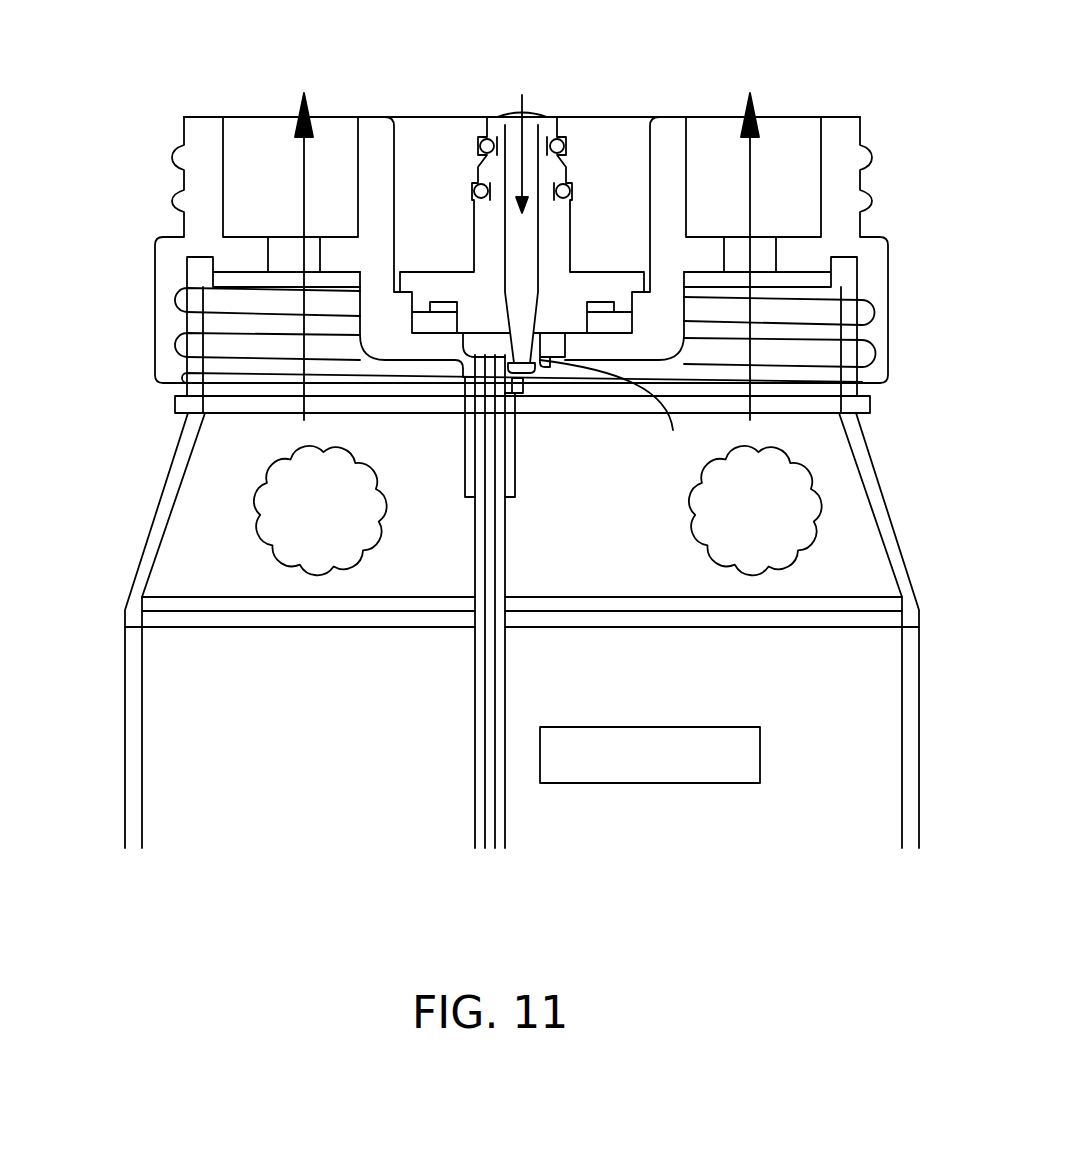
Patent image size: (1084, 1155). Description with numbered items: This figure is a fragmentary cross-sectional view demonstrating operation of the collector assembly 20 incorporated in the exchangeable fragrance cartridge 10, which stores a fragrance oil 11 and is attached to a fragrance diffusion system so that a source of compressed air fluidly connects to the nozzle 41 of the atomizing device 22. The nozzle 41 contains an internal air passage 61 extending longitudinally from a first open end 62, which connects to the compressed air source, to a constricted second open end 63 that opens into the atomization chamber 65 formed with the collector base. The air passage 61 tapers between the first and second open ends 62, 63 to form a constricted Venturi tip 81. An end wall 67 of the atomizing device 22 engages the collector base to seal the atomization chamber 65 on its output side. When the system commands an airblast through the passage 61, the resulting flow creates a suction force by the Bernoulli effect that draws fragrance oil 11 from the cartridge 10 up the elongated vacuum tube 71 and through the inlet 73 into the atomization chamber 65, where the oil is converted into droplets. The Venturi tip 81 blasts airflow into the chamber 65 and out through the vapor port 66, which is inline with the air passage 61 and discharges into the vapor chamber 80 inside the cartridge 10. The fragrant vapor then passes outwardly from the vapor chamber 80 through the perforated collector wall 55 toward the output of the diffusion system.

The exchangeable fragrance cartridge 10 is at (98, 157).
The fragrance oil 11 is at (760, 752).
The collector assembly 20 is at (912, 292).
The atomizing device 22 is at (450, 248).
The nozzle 41 is at (573, 223).
The perforated collector wall 55 is at (250, 237).
The internal air passage 61 is at (536, 163).
The first open end 62 is at (548, 116).
The constricted second open end 63 is at (520, 366).
The atomization chamber 65 is at (552, 366).
The vapor port 66 is at (524, 395).
The end wall 67 is at (580, 333).
The vacuum tube 71 is at (475, 553).
The inlet 73 is at (490, 356).
The vapor chamber 80 is at (663, 563).
The constricted Venturi tip 81 is at (616, 412).